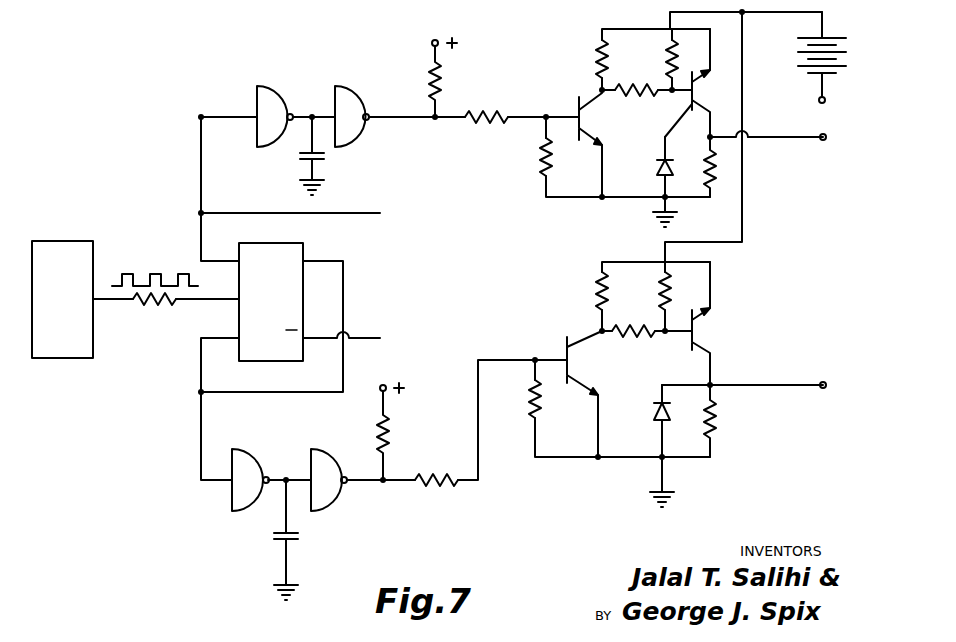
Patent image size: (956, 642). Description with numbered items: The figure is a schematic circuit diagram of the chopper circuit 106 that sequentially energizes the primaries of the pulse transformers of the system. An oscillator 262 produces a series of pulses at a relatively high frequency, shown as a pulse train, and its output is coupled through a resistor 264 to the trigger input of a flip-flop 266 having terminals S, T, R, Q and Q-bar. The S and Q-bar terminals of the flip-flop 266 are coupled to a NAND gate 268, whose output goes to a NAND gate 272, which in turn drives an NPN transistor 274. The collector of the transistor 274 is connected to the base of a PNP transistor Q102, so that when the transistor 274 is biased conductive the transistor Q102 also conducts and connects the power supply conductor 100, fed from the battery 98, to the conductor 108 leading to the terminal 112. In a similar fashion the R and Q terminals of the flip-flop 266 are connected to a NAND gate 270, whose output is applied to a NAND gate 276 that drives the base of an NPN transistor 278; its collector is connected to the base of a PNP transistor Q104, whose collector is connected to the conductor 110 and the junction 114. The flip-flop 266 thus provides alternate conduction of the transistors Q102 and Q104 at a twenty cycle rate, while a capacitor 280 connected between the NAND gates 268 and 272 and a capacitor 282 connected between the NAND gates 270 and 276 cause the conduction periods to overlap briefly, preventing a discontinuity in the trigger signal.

The battery 98 is at (840, 36).
The power supply conductor 100 is at (763, 0).
The chopper circuit 106 is at (194, 130).
The conductor 108 is at (796, 137).
The conductor 110 is at (746, 385).
The terminal 112 is at (824, 141).
The junction 114 is at (824, 381).
The oscillator 262 is at (71, 241).
The resistor 264 is at (153, 318).
The flip-flop 266 is at (305, 252).
The NAND gate 268 is at (257, 96).
The NAND gate 270 is at (258, 462).
The NAND gate 272 is at (338, 95).
The NPN transistor 274 is at (605, 143).
The NAND gate 276 is at (331, 455).
The NPN transistor 278 is at (594, 394).
The capacitor 280 is at (324, 162).
The capacitor 282 is at (300, 540).
The PNP transistor Q102 is at (661, 96).
The PNP transistor Q104 is at (697, 338).